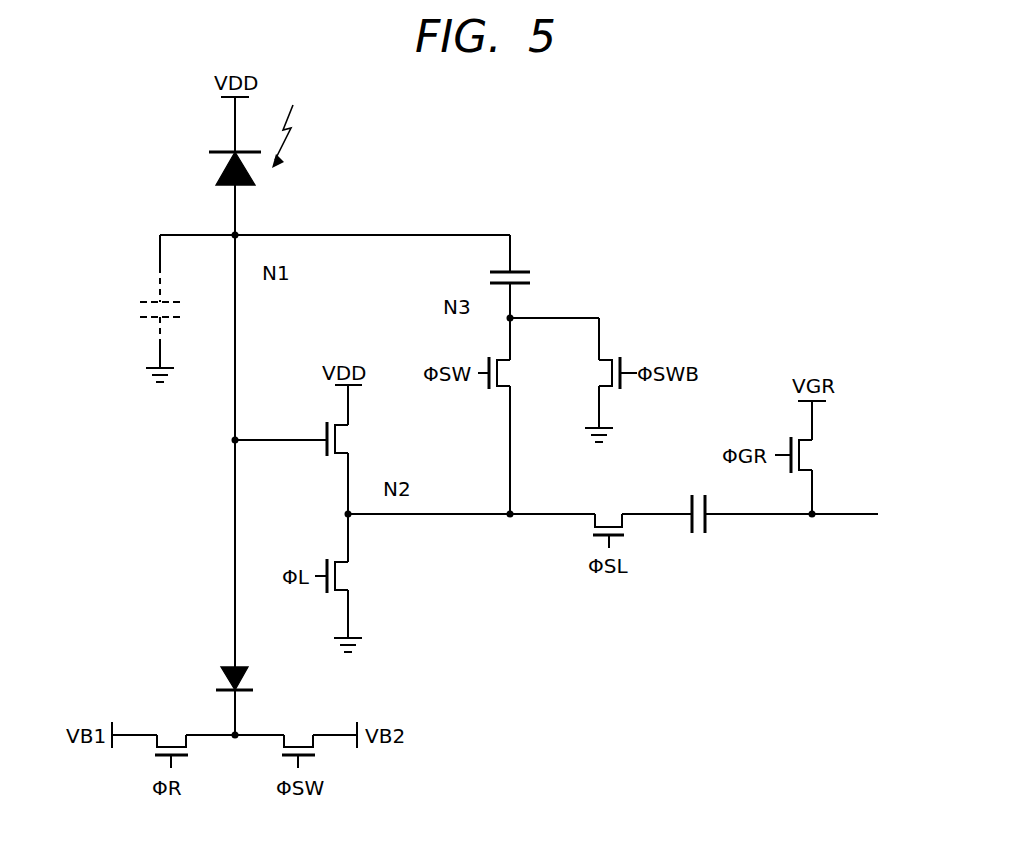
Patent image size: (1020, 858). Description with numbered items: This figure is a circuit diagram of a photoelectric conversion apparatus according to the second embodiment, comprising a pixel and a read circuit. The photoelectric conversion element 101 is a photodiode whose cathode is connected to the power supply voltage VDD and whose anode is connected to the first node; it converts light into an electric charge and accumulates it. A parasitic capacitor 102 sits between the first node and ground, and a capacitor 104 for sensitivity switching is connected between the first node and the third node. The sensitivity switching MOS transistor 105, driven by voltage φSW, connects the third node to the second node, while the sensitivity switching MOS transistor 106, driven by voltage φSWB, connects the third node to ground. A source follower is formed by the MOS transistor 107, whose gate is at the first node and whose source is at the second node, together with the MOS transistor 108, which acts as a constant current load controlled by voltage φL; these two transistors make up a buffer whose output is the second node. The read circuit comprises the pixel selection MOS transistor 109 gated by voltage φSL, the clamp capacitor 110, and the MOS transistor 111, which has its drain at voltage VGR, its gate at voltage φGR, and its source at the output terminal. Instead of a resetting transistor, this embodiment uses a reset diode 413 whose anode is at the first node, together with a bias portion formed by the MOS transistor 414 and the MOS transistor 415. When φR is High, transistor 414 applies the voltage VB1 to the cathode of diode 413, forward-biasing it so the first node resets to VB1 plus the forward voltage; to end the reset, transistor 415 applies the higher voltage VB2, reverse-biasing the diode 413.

The photoelectric conversion element 101 is at (225, 158).
The capacitor 102 is at (142, 312).
The capacitor 104 is at (548, 286).
The sensitivity switching MOS transistor 105 is at (493, 390).
The sensitivity switching MOS transistor 106 is at (615, 390).
The MOS transistor 107 is at (350, 440).
The MOS transistor 108 is at (350, 575).
The MOS transistor 109 is at (609, 506).
The clamp capacitor 110 is at (700, 538).
The MOS transistor 111 is at (815, 455).
The reset diode 413 is at (229, 665).
The MOS transistor 414 is at (171, 727).
The MOS transistor 415 is at (298, 727).